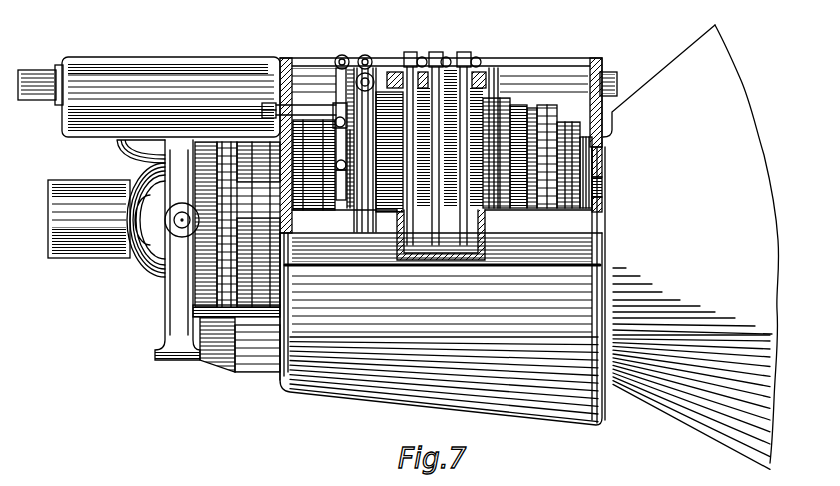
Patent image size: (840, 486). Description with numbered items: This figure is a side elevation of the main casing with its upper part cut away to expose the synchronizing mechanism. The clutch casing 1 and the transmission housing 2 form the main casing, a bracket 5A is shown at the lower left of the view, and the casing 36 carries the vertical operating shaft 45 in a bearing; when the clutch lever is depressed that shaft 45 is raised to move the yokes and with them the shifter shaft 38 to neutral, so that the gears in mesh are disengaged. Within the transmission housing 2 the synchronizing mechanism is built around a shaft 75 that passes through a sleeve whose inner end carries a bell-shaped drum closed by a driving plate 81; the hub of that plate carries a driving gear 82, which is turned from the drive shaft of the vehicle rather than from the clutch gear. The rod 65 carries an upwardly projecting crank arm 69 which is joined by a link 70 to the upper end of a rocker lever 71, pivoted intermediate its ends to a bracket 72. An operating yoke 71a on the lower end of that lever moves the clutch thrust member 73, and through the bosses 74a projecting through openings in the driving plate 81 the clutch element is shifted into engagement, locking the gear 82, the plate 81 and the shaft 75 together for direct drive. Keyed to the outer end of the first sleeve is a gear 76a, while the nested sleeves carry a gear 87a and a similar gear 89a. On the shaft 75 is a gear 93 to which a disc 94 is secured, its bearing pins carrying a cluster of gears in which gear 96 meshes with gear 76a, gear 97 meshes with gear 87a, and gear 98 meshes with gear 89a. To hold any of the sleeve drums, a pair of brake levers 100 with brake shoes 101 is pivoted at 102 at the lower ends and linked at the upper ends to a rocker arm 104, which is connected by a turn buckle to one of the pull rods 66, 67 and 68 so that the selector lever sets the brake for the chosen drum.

The clutch casing 1 is at (694, 70).
The transmission housing 2 is at (373, 401).
The support bracket 5A is at (196, 300).
The casing 36 is at (186, 67).
The shaft 38 is at (41, 94).
The vertical operating shaft 45 is at (279, 300).
The rod 65 is at (372, 74).
The pull rod 66 is at (477, 57).
The pull rod 67 is at (447, 57).
The pull rod 68 is at (423, 57).
The crank arm 69 is at (362, 56).
The link 70 is at (341, 55).
The rocker lever 71 is at (338, 78).
The operating yoke 71a is at (285, 183).
The bracket 72 is at (332, 108).
The clutch thrust member 73 is at (348, 195).
The bosses 74a is at (330, 190).
The shaft 75 is at (604, 164).
The gear 76a is at (602, 197).
The driving plate 81 is at (370, 135).
The driving gear 82 is at (303, 207).
The gear 87a is at (602, 182).
The gear 89a is at (551, 117).
The gear 93 is at (592, 145).
The disc 94 is at (545, 200).
The gear 96 is at (538, 110).
The gear 97 is at (520, 105).
The gear 98 is at (497, 98).
The brake levers 100 is at (398, 218).
The brake shoes 101 is at (405, 150).
The pivot 102 is at (432, 262).
The rocker arm 104 is at (468, 54).